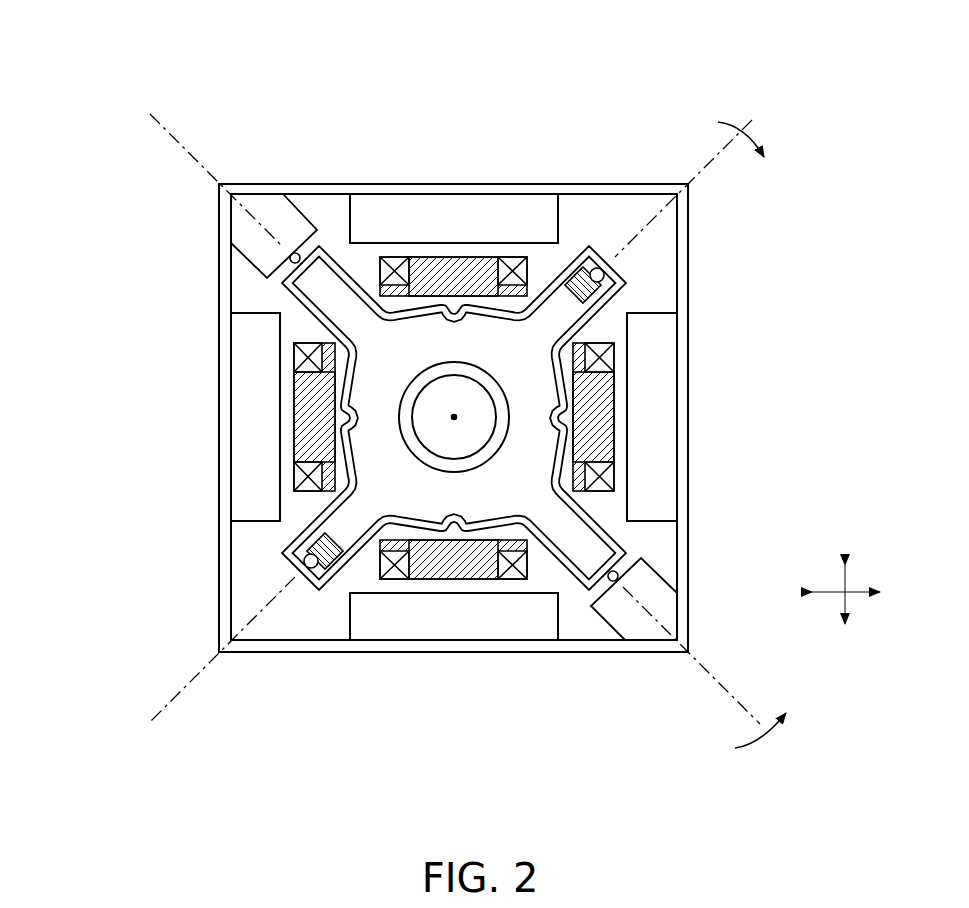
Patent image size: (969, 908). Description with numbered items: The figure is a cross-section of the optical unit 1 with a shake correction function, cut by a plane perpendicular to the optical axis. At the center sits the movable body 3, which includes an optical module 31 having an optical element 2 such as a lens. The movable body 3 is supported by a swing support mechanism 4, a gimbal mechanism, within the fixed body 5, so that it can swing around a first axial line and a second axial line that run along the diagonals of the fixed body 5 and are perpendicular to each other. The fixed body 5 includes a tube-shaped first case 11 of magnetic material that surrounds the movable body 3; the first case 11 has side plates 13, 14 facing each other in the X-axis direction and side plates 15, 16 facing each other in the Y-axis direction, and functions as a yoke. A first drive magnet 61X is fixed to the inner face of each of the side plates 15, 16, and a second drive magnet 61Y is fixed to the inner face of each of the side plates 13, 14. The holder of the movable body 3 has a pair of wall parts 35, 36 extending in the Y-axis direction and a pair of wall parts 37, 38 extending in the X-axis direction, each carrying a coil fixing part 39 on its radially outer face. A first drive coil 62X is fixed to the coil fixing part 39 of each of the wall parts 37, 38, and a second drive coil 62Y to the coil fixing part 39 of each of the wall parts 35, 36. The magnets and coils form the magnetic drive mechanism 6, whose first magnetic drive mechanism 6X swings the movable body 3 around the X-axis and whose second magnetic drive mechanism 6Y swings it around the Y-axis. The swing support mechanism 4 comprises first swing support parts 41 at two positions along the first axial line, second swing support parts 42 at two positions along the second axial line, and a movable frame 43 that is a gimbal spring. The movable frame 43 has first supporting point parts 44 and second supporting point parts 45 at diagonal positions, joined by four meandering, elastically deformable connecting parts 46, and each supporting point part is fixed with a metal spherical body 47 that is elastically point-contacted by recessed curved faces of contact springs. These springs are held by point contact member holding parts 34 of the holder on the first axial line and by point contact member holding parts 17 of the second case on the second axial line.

The optical unit with a shake correction function 1 is at (124, 92).
The optical element 2 is at (478, 412).
The movable body 3 is at (285, 444).
The swing support mechanism 4 is at (494, 418).
The fixed body 5 is at (586, 186).
The magnetic drive mechanism 6 is at (493, 429).
The first magnetic drive mechanism 6X is at (447, 101).
The second magnetic drive mechanism 6Y is at (785, 424).
The first drive magnet 61X is at (470, 212).
The first drive coil 62X is at (513, 252).
The second drive magnet 61Y is at (245, 392).
The second drive coil 62Y is at (296, 357).
The first case 11 is at (700, 228).
The side plate 13 is at (680, 328).
The side plate 14 is at (228, 331).
The side plate 15 is at (330, 192).
The side plate 16 is at (303, 645).
The point contact member holding part 17 is at (260, 271).
The optical module 31 is at (494, 378).
The point contact member holding part 34 is at (604, 290).
The wall part 35 is at (628, 495).
The wall part 36 is at (338, 500).
The wall part 37 is at (552, 243).
The wall part 38 is at (392, 582).
The coil fixing part 39 is at (430, 254).
The first swing support part 41 is at (640, 268).
The second swing support part 42 is at (648, 722).
The movable frame 43 is at (549, 575).
The first supporting point part 44 is at (600, 266).
The second supporting point part 45 is at (296, 288).
The connecting part 46 is at (418, 322).
The spherical body 47 is at (289, 256).